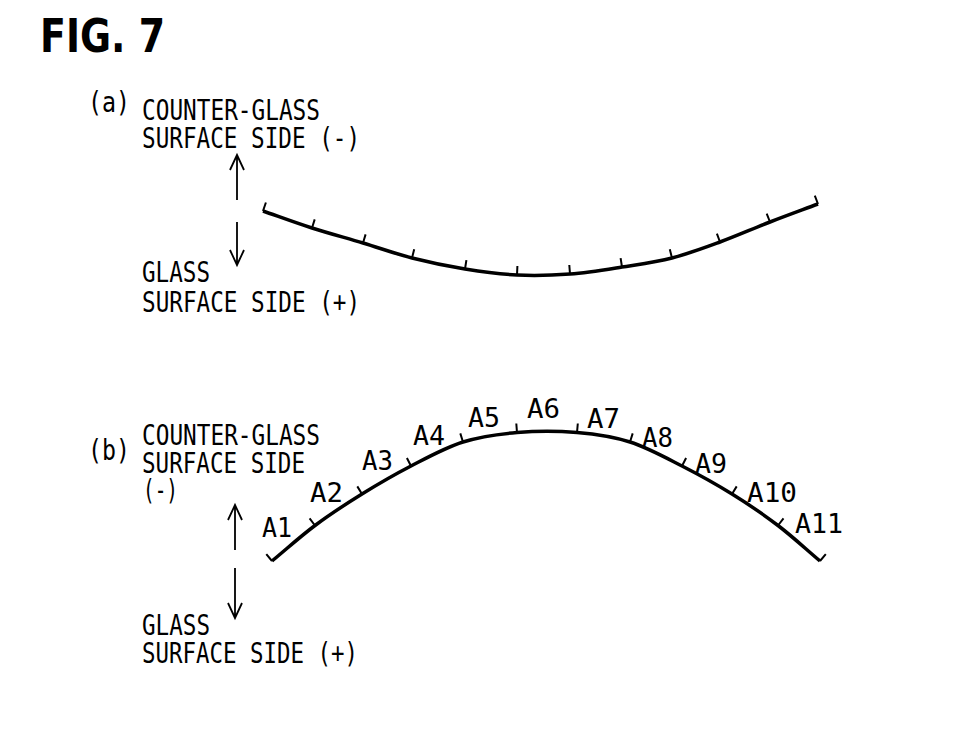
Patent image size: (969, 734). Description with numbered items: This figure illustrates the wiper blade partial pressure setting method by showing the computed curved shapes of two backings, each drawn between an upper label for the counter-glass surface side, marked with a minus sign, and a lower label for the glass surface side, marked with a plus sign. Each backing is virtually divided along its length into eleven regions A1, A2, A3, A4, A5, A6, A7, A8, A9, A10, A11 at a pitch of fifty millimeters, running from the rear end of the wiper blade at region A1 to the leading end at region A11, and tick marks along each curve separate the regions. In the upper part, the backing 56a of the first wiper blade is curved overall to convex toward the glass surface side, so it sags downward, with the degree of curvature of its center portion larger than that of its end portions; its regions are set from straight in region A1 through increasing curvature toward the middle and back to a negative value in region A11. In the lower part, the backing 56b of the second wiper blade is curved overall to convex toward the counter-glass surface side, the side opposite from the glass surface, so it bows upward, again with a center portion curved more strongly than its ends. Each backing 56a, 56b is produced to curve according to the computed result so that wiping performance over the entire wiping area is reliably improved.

The backing 56a is at (792, 224).
The backing 56b is at (802, 553).
The region A1 is at (294, 202).
The region A2 is at (344, 222).
The region A3 is at (392, 237).
The region A4 is at (441, 247).
The region A5 is at (491, 252).
The region A6 is at (541, 255).
The region A7 is at (594, 248).
The region A8 is at (644, 242).
The region A9 is at (692, 235).
The region A10 is at (737, 217).
The region A11 is at (783, 193).